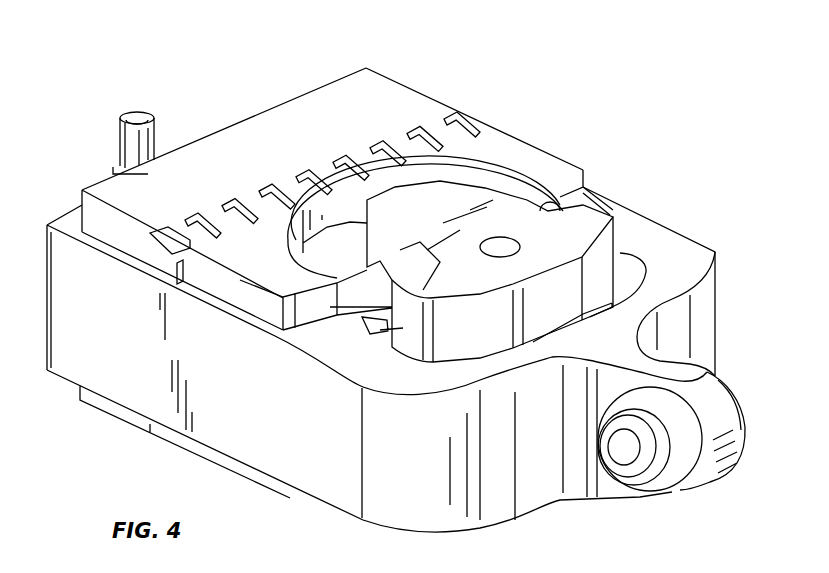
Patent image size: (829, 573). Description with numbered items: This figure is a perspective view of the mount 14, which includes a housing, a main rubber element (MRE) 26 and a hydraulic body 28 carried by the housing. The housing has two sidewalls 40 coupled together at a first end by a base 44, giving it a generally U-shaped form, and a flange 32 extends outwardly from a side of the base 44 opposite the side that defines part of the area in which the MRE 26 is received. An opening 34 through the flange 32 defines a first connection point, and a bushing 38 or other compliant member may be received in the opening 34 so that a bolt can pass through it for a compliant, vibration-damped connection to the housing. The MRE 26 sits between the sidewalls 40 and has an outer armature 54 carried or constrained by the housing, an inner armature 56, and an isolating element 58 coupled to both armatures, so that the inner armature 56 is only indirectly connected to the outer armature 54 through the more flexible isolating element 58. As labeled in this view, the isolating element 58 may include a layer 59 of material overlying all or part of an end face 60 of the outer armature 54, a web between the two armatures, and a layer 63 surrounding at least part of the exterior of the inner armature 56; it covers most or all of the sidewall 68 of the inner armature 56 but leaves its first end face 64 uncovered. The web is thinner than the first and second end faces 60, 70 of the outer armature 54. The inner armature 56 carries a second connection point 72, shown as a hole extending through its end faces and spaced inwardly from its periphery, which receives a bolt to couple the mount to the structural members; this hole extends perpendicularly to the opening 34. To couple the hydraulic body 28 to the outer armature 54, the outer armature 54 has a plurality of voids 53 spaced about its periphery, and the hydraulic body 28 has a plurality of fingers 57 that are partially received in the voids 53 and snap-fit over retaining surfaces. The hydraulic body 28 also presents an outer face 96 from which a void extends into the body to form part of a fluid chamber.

The mount 14 is at (695, 100).
The main rubber element (MRE) 26 is at (625, 258).
The hydraulic body 28 is at (405, 78).
The flange 32 is at (637, 352).
The opening 34 is at (622, 452).
The bushing 38 is at (665, 482).
The sidewalls 40 is at (80, 358).
The base 44 is at (482, 365).
The voids 53 is at (450, 127).
The outer armature 54 is at (540, 133).
The inner armature 56 is at (600, 200).
The fingers 57 is at (388, 132).
The isolating element 58 is at (332, 224).
The layer 59 is at (301, 232).
The end face 60 is at (315, 250).
The layer 63 is at (398, 328).
The first end face 64 is at (490, 271).
The sidewall 68 is at (518, 202).
The second end face 70 is at (260, 197).
The second connection point 72 is at (492, 247).
The outer face 96 is at (100, 187).